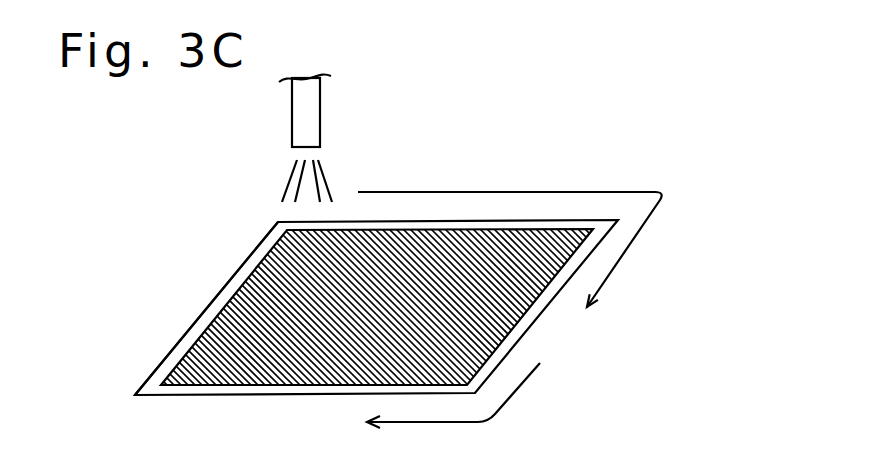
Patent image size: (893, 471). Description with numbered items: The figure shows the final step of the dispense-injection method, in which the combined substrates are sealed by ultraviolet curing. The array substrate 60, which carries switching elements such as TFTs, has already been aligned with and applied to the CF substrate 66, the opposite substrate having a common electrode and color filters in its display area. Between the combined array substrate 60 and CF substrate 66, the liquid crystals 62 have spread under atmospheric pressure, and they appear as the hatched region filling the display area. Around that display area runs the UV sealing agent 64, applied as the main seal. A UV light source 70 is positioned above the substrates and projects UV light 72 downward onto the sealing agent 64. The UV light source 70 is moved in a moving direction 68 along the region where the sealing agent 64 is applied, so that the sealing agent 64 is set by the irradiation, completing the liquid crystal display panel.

The array substrate 60 is at (382, 318).
The liquid crystals 62 is at (267, 272).
The UV sealing agent 64 is at (211, 310).
The CF substrate 66 is at (323, 398).
The moving direction 68 is at (626, 253).
The UV light source 70 is at (320, 110).
The UV light 72 is at (325, 175).